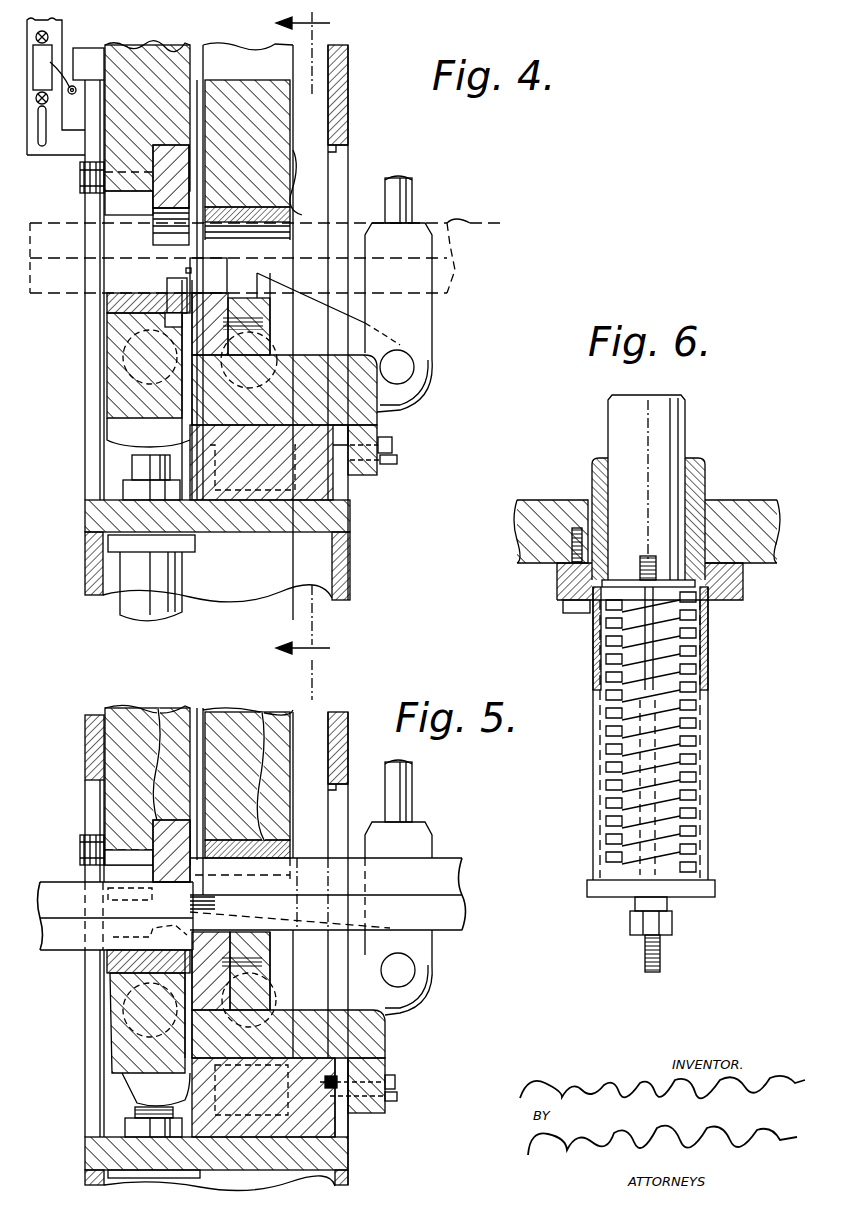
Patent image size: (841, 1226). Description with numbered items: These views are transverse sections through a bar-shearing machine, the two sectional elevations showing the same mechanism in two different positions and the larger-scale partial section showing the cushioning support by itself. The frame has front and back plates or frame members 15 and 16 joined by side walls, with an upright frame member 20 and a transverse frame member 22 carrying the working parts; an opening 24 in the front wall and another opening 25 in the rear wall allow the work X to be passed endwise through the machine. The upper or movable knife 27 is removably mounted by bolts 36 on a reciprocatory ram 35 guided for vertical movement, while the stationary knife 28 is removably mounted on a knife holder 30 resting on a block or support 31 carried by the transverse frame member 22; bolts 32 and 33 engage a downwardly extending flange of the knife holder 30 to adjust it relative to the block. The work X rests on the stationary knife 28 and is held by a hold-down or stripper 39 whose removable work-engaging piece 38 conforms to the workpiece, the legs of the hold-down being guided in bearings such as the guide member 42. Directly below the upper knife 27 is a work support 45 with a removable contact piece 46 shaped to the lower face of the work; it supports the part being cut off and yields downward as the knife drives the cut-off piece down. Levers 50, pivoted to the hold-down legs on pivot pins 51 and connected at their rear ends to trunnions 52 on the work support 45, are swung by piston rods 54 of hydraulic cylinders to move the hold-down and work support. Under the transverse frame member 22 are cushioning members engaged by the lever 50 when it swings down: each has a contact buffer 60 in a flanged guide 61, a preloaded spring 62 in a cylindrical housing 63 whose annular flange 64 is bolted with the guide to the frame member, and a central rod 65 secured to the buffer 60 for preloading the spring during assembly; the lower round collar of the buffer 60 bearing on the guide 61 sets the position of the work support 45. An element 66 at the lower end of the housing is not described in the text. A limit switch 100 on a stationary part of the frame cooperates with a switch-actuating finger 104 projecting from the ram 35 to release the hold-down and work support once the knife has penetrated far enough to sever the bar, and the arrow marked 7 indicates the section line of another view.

In FIG. 4, the section line 7- 7 is at (332, 23).
In FIG. 5, the section line 7- 7 is at (323, 675).
In FIG. 4, the front plate or frame member 15 is at (85, 575).
In FIG. 5, the front plate or frame member 15 is at (85, 720).
In FIG. 4, the back plate or frame member 16 is at (352, 581).
In FIG. 5, the back plate or frame member 16 is at (350, 720).
In FIG. 4, the upright frame member 20 is at (350, 61).
In FIG. 5, the upright frame member 20 is at (345, 712).
In FIG. 4, the transverse frame member 22 is at (295, 540).
In FIG. 5, the transverse frame member 22 is at (350, 1170).
In FIG. 6, the transverse frame member 22 is at (540, 505).
In FIG. 4, the opening 24 is at (85, 205).
In FIG. 5, the opening 24 is at (90, 785).
In FIG. 4, the opening 25 is at (336, 155).
In FIG. 5, the opening 25 is at (336, 792).
In FIG. 4, the upper or movable knife 27 is at (160, 240).
In FIG. 5, the upper or movable knife 27 is at (160, 710).
In FIG. 4, the stationary knife 28 is at (180, 268).
In FIG. 5, the stationary knife 28 is at (221, 876).
In FIG. 4, the knife support 30 is at (300, 368).
In FIG. 5, the knife support 30 is at (302, 1014).
In FIG. 4, the block or support 31 is at (335, 495).
In FIG. 5, the block or support 31 is at (337, 1128).
In FIG. 4, the bolt 32 is at (392, 442).
In FIG. 5, the bolt 32 is at (395, 1080).
In FIG. 4, the bolt 33 is at (397, 460).
In FIG. 5, the bolt 33 is at (397, 1096).
In FIG. 4, the reciprocatory ram 35 is at (155, 47).
In FIG. 5, the reciprocatory ram 35 is at (125, 708).
In FIG. 4, the bolt 36 is at (80, 178).
In FIG. 5, the bolt 36 is at (80, 850).
In FIG. 4, the work-engaging piece 38 is at (325, 160).
In FIG. 5, the work-engaging piece 38 is at (264, 712).
In FIG. 4, the hold-down or stripper 39 is at (236, 50).
In FIG. 5, the hold-down or stripper 39 is at (228, 712).
In FIG. 4, the guide member or bearing 42 is at (300, 88).
In FIG. 5, the guide member or bearing 42 is at (312, 718).
In FIG. 4, the work support 45 is at (125, 400).
In FIG. 5, the work support 45 is at (125, 1060).
In FIG. 4, the contact piece 46 is at (110, 300).
In FIG. 5, the contact piece 46 is at (115, 960).
In FIG. 4, the lever 50 is at (360, 328).
In FIG. 5, the lever 50 is at (405, 972).
In FIG. 4, the pivot pin or bearing 51 is at (280, 322).
In FIG. 5, the pivot pin or bearing 51 is at (280, 970).
In FIG. 4, the trunnion or bearing 52 is at (105, 388).
In FIG. 5, the trunnion or bearing 52 is at (105, 1013).
In FIG. 4, the piston rod 54 is at (410, 188).
In FIG. 5, the piston rod 54 is at (410, 780).
In FIG. 4, the contact buffer 60 is at (132, 470).
In FIG. 5, the contact buffer 60 is at (135, 1112).
In FIG. 6, the contact buffer 60 is at (608, 410).
In FIG. 4, the flanged guide 61 is at (123, 492).
In FIG. 5, the flanged guide 61 is at (125, 1130).
In FIG. 6, the flanged guide 61 is at (705, 470).
In FIG. 6, the preloaded spring 62 is at (655, 655).
In FIG. 4, the cylindrical housing 63 is at (182, 577).
In FIG. 6, the cylindrical housing 63 is at (708, 780).
In FIG. 4, the annular flange 64 is at (108, 545).
In FIG. 6, the annular flange 64 is at (557, 590).
In FIG. 6, the central rod 65 is at (640, 660).
In FIG. 6, the adjusting nut 66 is at (672, 928).
In FIG. 4, the limit switch 100 is at (64, 45).
In FIG. 4, the switch actuating finger 104 is at (82, 60).
In FIG. 4, the work X is at (275, 252).
In FIG. 5, the work X is at (462, 877).